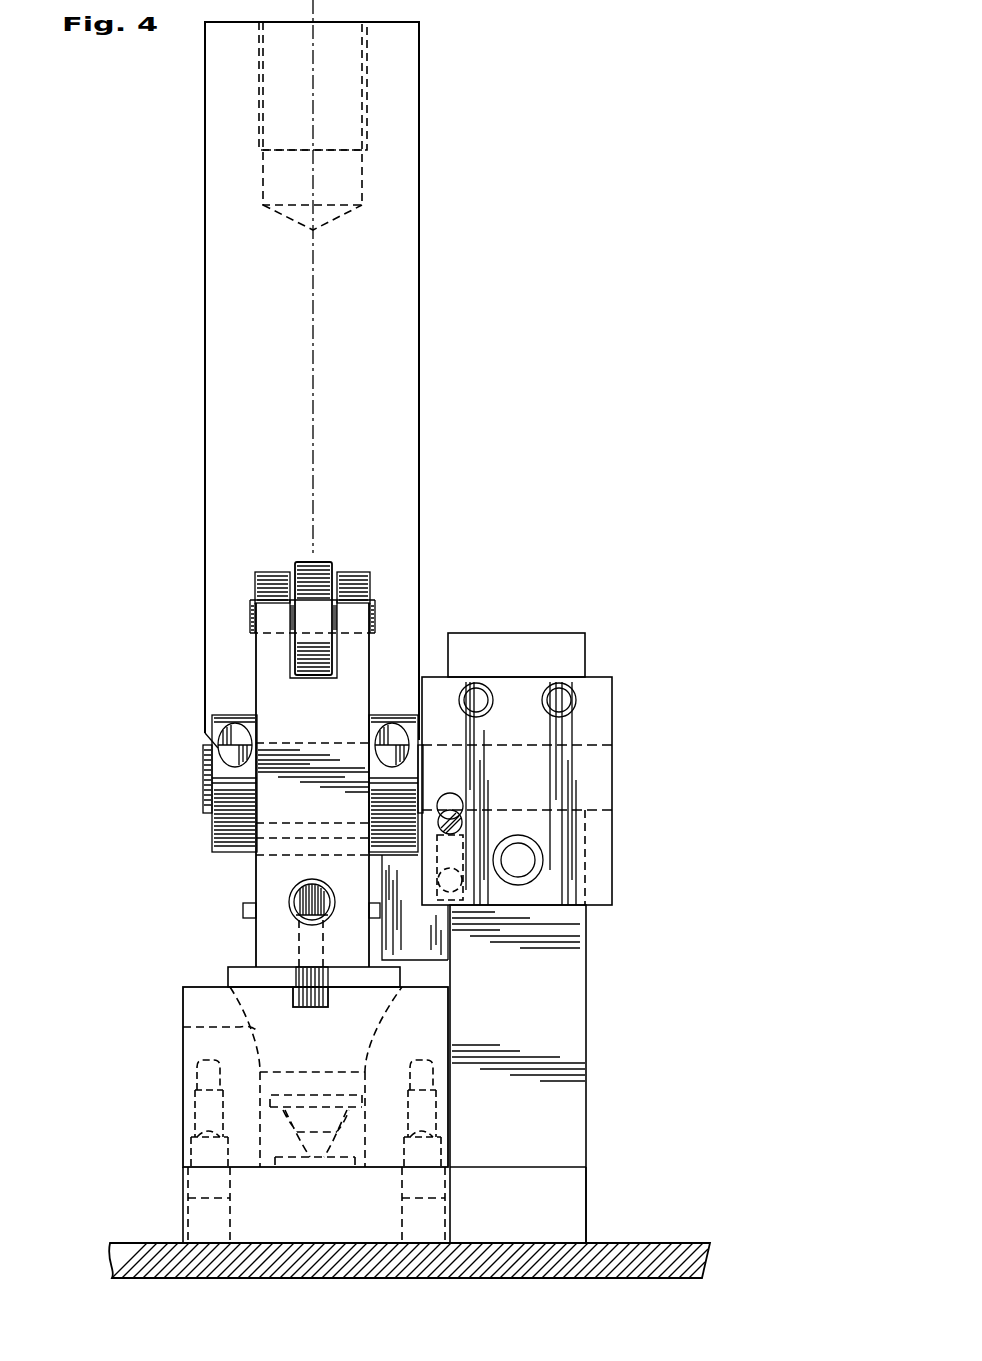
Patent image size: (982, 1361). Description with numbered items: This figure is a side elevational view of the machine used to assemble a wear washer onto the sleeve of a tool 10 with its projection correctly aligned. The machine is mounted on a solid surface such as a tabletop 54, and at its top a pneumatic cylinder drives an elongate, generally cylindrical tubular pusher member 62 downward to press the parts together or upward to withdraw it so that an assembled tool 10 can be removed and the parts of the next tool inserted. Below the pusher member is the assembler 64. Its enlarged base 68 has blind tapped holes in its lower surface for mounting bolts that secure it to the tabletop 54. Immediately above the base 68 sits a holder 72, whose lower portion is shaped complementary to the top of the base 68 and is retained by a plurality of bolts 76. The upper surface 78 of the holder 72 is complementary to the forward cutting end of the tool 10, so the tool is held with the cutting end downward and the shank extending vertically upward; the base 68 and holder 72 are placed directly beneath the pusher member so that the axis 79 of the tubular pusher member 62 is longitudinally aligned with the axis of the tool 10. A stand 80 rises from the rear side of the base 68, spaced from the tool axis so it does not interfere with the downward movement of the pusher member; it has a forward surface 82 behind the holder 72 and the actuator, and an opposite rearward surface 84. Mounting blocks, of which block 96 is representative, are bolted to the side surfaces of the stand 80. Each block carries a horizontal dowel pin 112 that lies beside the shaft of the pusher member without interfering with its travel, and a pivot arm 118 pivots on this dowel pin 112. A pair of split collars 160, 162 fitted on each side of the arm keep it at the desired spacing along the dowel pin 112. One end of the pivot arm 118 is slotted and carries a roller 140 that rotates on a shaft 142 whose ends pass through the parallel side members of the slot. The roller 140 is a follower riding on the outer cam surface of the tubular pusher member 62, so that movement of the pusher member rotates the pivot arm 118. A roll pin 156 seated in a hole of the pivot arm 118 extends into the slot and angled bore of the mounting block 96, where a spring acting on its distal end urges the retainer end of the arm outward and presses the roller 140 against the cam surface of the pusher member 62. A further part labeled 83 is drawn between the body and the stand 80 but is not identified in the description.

The tool 10 is at (228, 975).
The tabletop 54 is at (682, 1243).
The tubular pusher member 62 is at (420, 421).
The assembler 64 is at (623, 716).
The base 68 is at (586, 1207).
The holder 72 is at (183, 1068).
The bolts 76 is at (195, 1110).
The upper surface 78 is at (183, 1027).
The axis 79 is at (377, 297).
The stand 80 is at (592, 1097).
The forward surface 82 is at (437, 965).
The spacer 83 is at (426, 940).
The rearward surface 84 is at (586, 1013).
The mounting block 96 is at (592, 677).
The dowel pin 112 is at (205, 782).
The pivot arm 118 is at (257, 678).
The roller 140 is at (300, 562).
The shaft 142 is at (250, 625).
The roll pin 156 is at (403, 867).
The split collar 160 is at (212, 832).
The split collar 162 is at (405, 740).